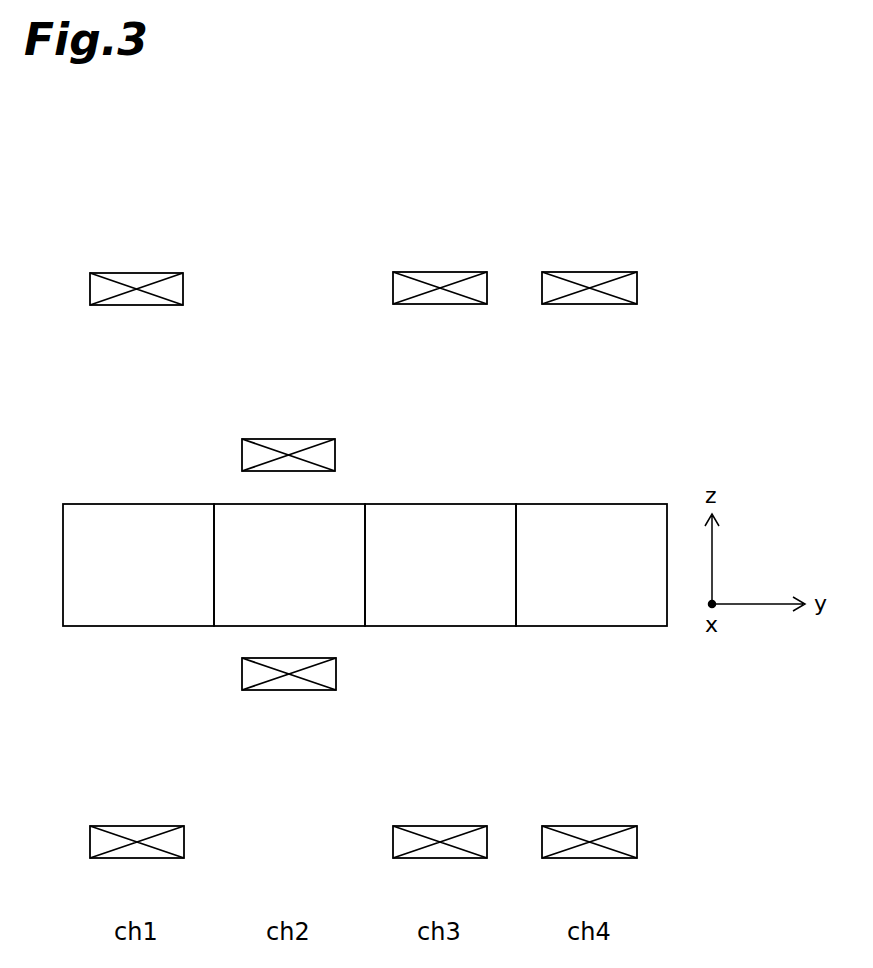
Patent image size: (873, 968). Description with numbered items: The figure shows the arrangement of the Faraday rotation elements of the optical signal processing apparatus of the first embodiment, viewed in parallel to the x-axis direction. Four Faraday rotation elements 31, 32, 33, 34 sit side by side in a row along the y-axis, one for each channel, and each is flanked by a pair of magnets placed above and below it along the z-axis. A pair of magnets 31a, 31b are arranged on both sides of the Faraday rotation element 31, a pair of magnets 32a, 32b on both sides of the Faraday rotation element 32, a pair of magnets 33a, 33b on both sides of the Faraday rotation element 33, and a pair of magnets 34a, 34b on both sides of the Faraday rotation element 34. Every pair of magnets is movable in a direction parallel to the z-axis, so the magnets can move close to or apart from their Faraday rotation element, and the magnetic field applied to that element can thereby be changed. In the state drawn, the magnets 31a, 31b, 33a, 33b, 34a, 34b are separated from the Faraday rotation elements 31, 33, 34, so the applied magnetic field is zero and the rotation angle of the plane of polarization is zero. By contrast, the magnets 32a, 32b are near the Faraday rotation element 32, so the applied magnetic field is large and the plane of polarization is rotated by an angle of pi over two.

The Faraday rotation element 31 is at (80, 617).
The Faraday rotation element 32 is at (254, 616).
The Faraday rotation element 33 is at (442, 617).
The Faraday rotation element 34 is at (593, 617).
The magnet 31a is at (137, 289).
The magnet 32a is at (288, 455).
The magnet 33a is at (440, 288).
The magnet 34a is at (590, 288).
The magnet 31b is at (140, 842).
The magnet 32b is at (288, 690).
The magnet 33b is at (441, 842).
The magnet 34b is at (591, 842).